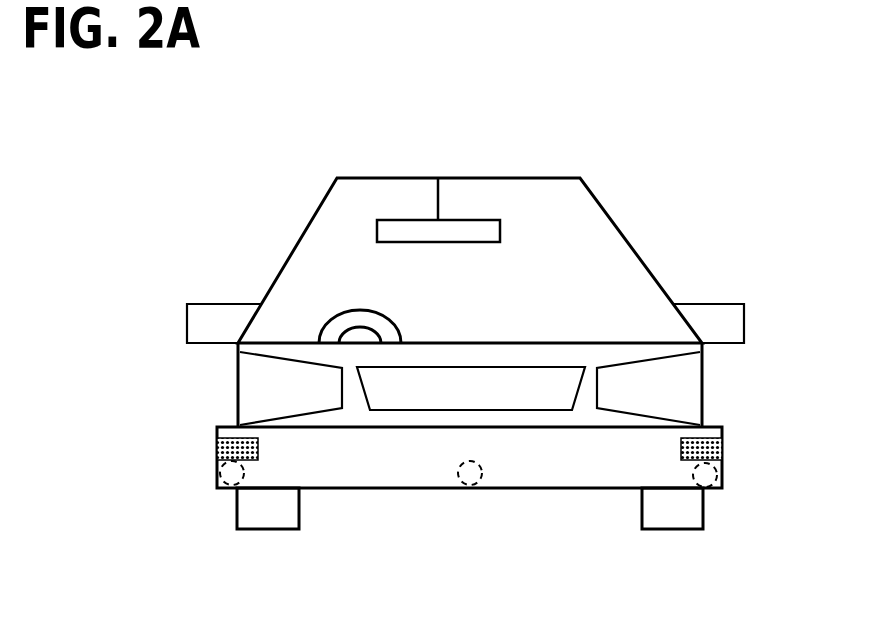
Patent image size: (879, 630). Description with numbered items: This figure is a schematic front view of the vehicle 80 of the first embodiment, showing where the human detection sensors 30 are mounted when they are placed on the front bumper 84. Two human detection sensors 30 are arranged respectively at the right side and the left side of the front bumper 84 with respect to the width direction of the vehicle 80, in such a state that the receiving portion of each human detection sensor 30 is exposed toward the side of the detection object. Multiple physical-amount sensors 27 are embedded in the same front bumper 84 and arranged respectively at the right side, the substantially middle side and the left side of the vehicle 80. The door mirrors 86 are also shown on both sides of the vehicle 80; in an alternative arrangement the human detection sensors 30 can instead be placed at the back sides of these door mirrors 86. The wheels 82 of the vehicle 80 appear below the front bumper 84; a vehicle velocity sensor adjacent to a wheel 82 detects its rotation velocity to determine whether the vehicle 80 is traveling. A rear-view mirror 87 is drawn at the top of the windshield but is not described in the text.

The vehicle 80 is at (603, 210).
The front bumper 84 is at (392, 490).
The wheel 82 is at (263, 530).
The door mirror 86 is at (222, 304).
The rear-view mirror 87 is at (503, 228).
The human detection sensor 30 is at (217, 447).
The physical-amount sensor 27 is at (222, 468).